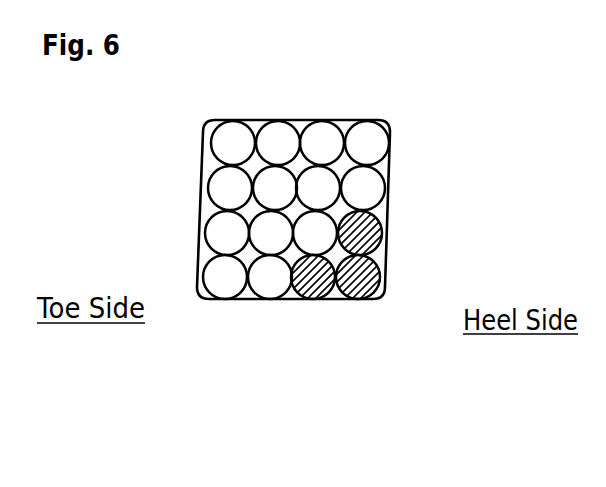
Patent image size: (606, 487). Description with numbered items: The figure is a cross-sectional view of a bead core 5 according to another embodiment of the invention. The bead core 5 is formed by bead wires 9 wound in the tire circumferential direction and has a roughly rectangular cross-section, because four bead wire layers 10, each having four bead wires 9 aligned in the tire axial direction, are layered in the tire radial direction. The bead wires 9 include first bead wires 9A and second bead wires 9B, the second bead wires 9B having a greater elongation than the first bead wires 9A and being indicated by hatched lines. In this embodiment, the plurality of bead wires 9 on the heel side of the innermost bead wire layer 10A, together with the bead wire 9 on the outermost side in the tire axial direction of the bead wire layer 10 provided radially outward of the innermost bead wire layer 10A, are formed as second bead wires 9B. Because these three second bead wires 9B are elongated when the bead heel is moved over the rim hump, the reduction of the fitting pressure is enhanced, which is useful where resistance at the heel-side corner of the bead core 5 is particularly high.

The bead core 5 is at (165, 205).
The bead wires 9 is at (338, 236).
The first bead wires 9A is at (320, 150).
The second bead wires 9B is at (360, 237).
The bead wire layers 10 is at (397, 147).
The innermost bead wire layer 10A is at (463, 397).